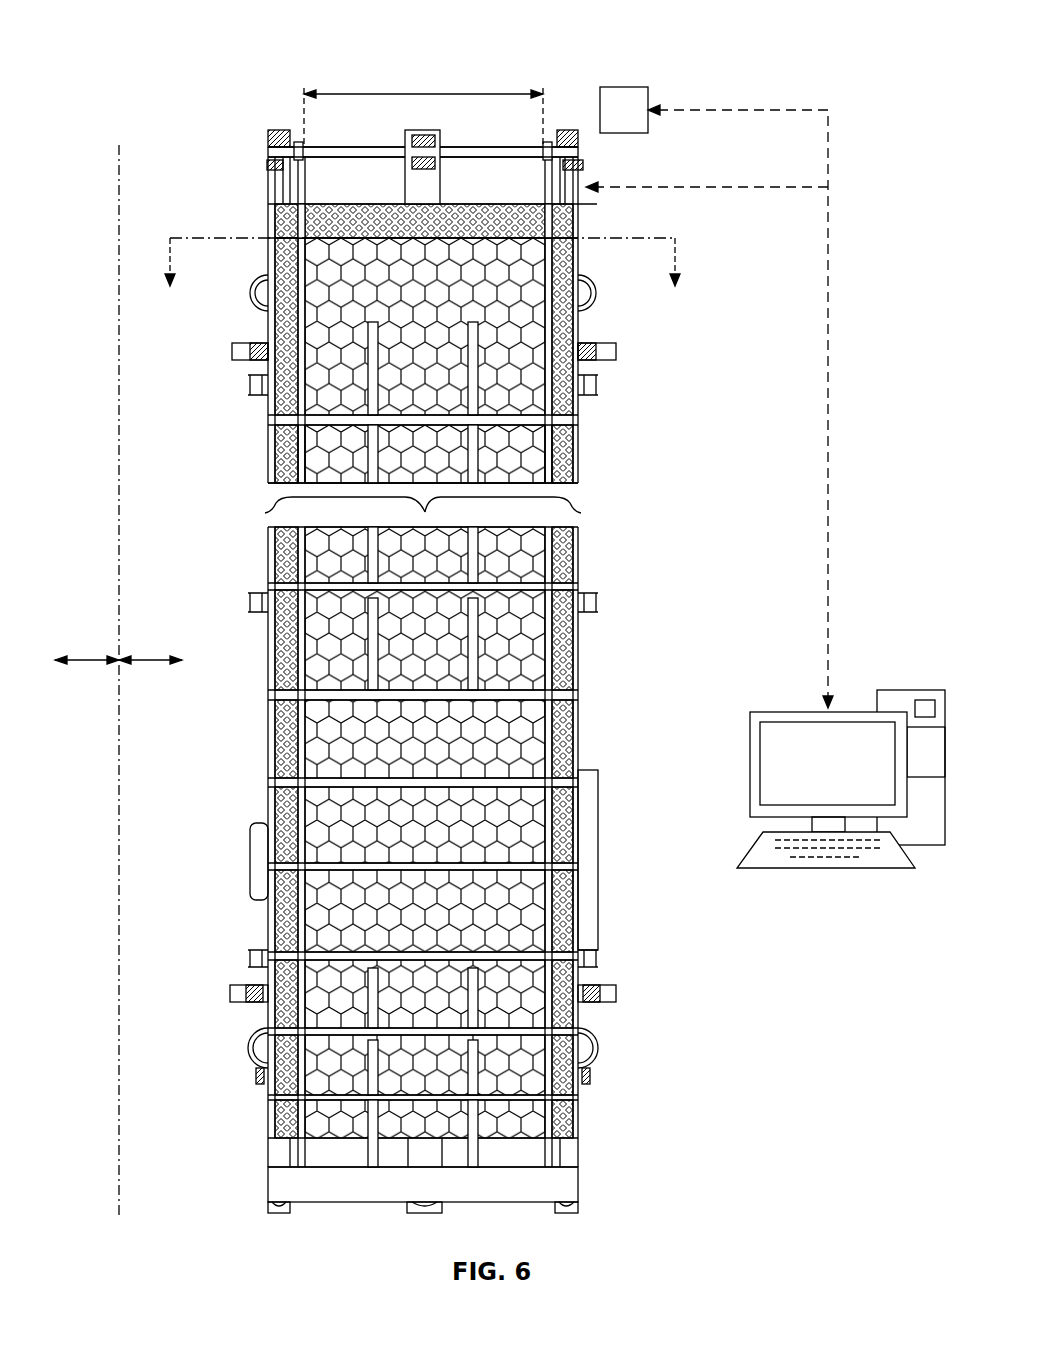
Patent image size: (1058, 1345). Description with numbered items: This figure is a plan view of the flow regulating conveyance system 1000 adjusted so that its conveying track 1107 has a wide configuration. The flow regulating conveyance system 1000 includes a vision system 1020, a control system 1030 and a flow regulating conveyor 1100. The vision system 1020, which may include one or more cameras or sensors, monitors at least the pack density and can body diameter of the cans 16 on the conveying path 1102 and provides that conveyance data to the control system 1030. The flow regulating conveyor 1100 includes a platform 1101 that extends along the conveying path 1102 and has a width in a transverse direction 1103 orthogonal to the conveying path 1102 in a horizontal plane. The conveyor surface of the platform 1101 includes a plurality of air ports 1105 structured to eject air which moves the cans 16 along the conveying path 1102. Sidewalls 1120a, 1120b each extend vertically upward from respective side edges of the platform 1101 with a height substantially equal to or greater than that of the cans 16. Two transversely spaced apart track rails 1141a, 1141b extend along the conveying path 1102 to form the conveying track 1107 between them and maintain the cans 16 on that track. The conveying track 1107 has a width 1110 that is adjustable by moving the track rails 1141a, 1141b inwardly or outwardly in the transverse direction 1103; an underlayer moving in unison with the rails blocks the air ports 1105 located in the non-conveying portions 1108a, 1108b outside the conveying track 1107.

The flow regulating conveyance system 1000 is at (252, 47).
The flow regulating conveyor 1100 is at (286, 135).
The width 1110 is at (410, 93).
The vision system 1020 is at (636, 87).
The cans 16 is at (442, 250).
The platform 1101 is at (460, 203).
The sidewall 1120b is at (266, 433).
The sidewall 1120a is at (578, 422).
The track rail 1141b is at (285, 480).
The track rail 1141a is at (562, 445).
The non-conveying portion 1108b is at (283, 497).
The non-conveying portion 1108a is at (570, 497).
The conveying track 1107 is at (418, 486).
The transverse direction 1103 is at (148, 668).
The conveying path 1102 is at (122, 768).
The control system 1030 is at (840, 715).
The air ports 1105 is at (567, 1110).